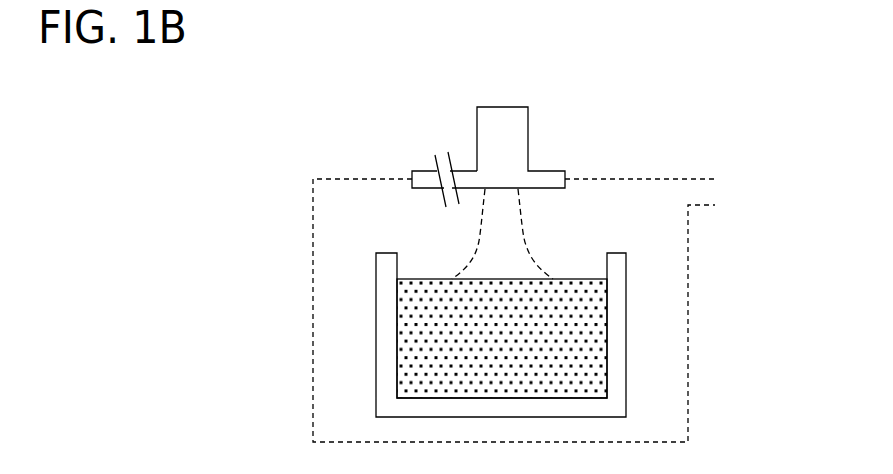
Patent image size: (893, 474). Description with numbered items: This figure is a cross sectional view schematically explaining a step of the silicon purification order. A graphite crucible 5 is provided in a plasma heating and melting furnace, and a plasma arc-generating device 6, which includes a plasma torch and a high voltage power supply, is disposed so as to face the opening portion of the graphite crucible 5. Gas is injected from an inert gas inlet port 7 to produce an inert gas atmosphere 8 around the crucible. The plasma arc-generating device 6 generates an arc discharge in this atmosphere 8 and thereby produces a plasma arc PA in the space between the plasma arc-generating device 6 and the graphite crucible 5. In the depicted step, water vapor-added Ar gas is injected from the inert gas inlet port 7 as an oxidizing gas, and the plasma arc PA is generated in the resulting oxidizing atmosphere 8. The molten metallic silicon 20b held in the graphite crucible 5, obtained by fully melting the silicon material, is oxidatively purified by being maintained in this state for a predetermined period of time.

The graphite crucible 5 is at (627, 338).
The plasma arc-generating device 6 is at (530, 141).
The inert gas inlet port 7 is at (435, 160).
The inert gas atmosphere 8 is at (668, 256).
The molten metallic silicon 20b is at (415, 341).
The plasma arc PA is at (525, 228).